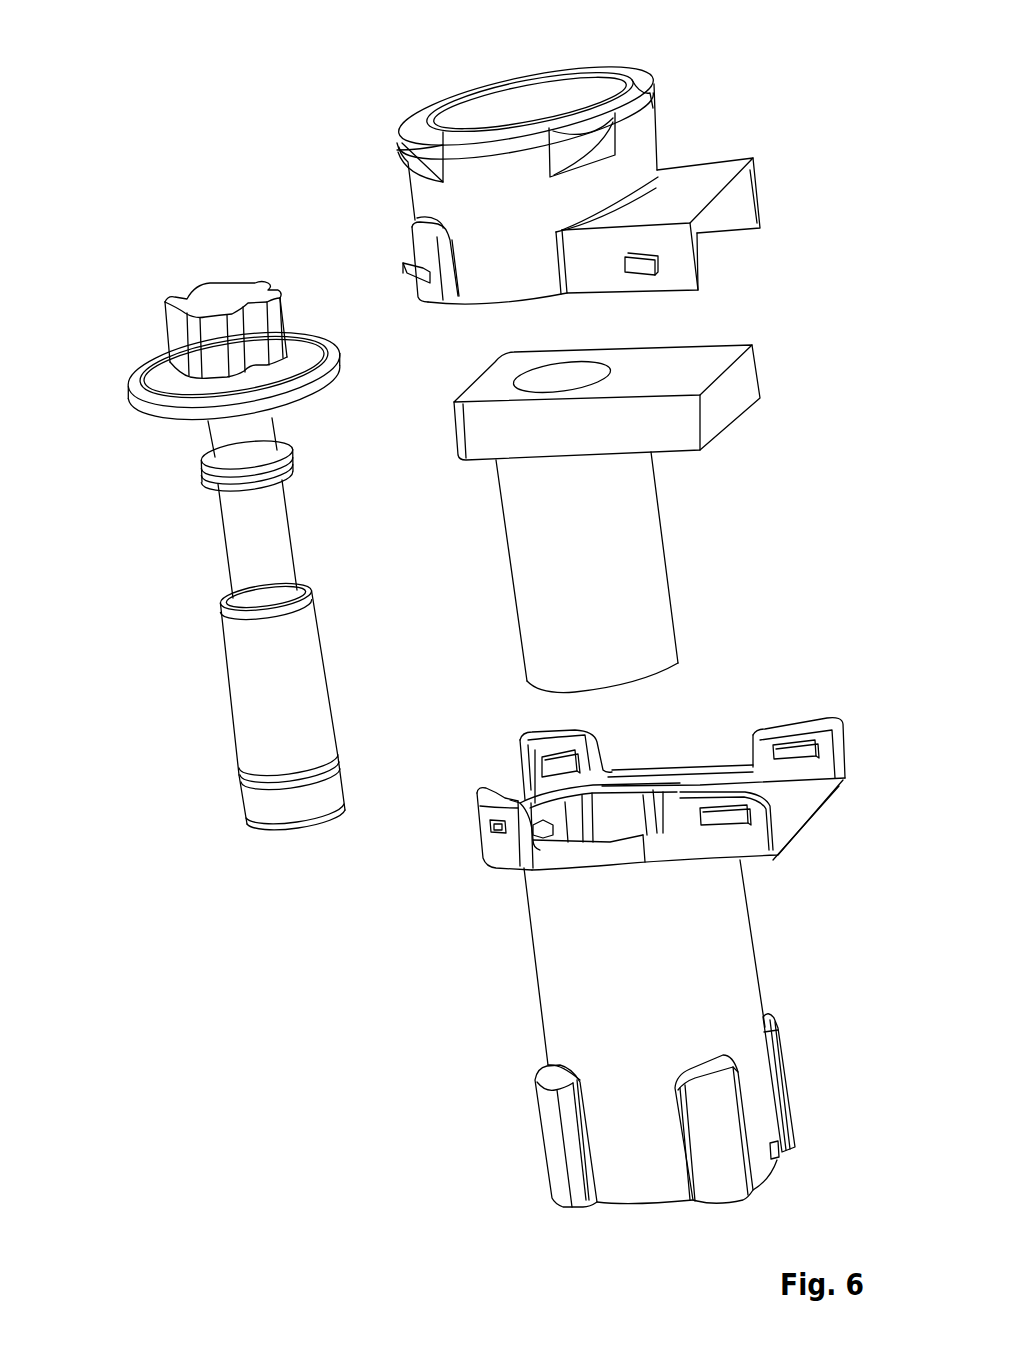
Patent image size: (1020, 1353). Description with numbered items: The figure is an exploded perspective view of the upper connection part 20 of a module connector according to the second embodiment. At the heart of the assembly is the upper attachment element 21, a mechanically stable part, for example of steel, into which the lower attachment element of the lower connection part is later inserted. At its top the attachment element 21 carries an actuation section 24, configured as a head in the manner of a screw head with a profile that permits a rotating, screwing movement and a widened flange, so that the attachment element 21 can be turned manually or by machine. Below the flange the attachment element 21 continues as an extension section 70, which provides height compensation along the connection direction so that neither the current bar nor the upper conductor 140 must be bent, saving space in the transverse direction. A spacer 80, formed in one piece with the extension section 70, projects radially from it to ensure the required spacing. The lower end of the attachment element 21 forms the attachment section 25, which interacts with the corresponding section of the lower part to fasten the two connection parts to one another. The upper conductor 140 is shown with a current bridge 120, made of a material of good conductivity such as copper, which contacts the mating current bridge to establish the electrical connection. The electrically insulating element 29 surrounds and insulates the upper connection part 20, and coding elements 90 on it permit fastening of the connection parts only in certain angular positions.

The upper connection part 20 is at (430, 72).
The insulating element 29 is at (696, 182).
The upper attachment element 21 is at (217, 266).
The actuation section 24 is at (178, 320).
The spacer 80 is at (201, 473).
The extension section 70 is at (222, 547).
The attachment section 25 is at (230, 689).
The upper conductor 140 is at (766, 352).
The current bridge 120 is at (673, 569).
The coding elements 90 is at (551, 1156).